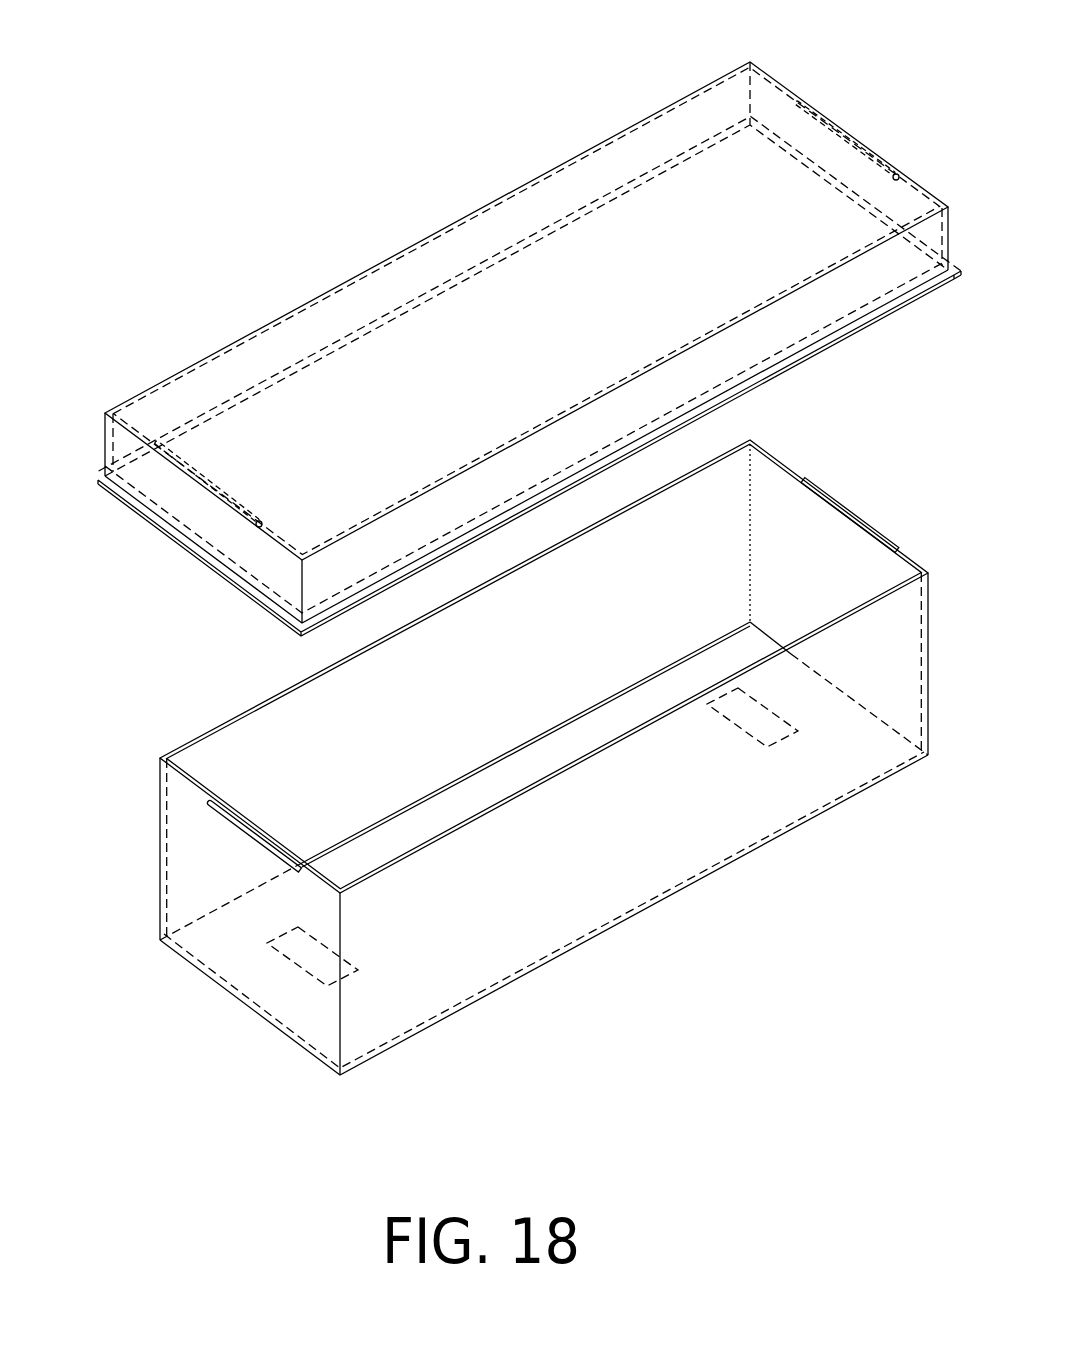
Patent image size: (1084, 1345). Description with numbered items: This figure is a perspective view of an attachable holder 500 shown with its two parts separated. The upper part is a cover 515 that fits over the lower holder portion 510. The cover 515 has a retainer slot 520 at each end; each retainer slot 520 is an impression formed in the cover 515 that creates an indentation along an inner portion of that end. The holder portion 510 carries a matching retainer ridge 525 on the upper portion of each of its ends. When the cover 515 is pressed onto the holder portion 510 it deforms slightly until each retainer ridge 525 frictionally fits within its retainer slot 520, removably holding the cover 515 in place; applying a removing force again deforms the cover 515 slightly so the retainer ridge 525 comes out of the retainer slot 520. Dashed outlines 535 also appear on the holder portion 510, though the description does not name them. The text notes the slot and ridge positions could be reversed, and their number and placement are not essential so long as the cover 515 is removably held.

The attachable holder 500 is at (247, 153).
The holder portion 510 is at (250, 712).
The cover 515 is at (420, 268).
The retainer slot 520 is at (838, 140).
The retainer ridge 525 is at (842, 510).
The cutouts 535 is at (777, 740).